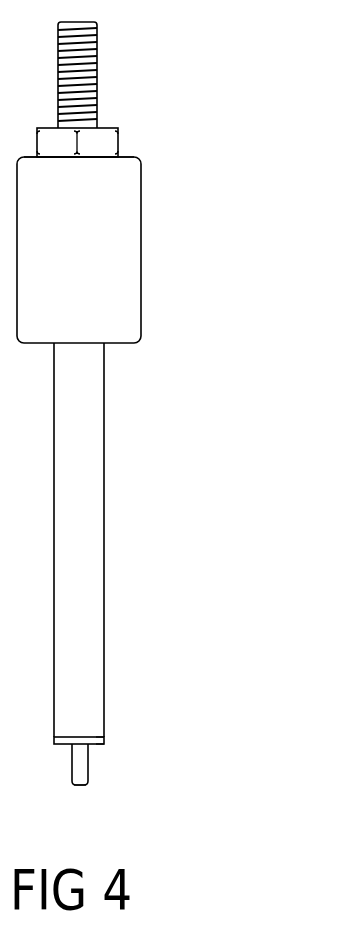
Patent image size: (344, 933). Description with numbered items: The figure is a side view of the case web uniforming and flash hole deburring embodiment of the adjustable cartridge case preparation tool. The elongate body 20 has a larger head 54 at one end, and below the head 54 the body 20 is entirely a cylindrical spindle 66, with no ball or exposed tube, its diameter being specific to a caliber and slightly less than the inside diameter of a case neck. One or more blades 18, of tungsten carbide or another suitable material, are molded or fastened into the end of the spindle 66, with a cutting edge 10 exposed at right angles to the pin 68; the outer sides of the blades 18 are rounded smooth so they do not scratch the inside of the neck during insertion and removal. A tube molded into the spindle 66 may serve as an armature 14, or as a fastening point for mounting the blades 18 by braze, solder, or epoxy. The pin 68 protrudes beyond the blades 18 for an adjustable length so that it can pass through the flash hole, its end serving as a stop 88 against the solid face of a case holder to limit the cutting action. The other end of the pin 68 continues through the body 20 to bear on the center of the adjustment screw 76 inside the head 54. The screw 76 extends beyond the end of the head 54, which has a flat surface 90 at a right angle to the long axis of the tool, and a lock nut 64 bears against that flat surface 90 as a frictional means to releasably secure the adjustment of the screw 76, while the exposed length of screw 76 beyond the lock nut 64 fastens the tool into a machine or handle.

The adjustment screw 76 is at (97, 37).
The lock nut 64 is at (95, 140).
The flat surface 90 is at (122, 157).
The elongate body 20 is at (148, 207).
The head 54 is at (111, 274).
The spindle 66 is at (78, 475).
The armature 14 is at (100, 738).
The blade 18 is at (102, 741).
The cutting edge 10 is at (105, 743).
The pin 68 is at (80, 753).
The stop 88 is at (87, 785).